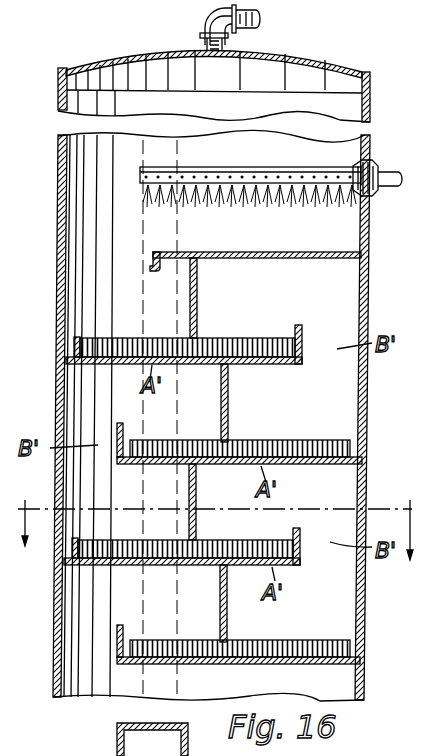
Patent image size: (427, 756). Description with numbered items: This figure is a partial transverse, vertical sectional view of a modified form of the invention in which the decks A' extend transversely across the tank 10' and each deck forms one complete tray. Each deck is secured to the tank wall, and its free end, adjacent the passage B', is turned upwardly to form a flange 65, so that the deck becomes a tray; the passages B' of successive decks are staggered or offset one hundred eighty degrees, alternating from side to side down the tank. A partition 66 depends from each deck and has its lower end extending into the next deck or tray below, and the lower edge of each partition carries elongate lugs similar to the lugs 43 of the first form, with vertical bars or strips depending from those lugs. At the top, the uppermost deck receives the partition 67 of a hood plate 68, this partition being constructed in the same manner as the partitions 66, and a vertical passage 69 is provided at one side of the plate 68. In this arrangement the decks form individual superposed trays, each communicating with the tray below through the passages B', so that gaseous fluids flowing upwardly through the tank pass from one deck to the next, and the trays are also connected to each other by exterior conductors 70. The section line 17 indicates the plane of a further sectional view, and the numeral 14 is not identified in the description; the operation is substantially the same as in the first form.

The tank 10' is at (232, 418).
The tray plate 14 is at (165, 464).
The section line 17- 17 is at (218, 543).
The lugs 43 is at (187, 443).
The flange 65 is at (302, 333).
The partition 66 is at (228, 404).
The partition 67 is at (197, 291).
The hood plate 68 is at (270, 252).
The vertical passage 69 is at (100, 269).
The exterior conductors 70 is at (189, 748).